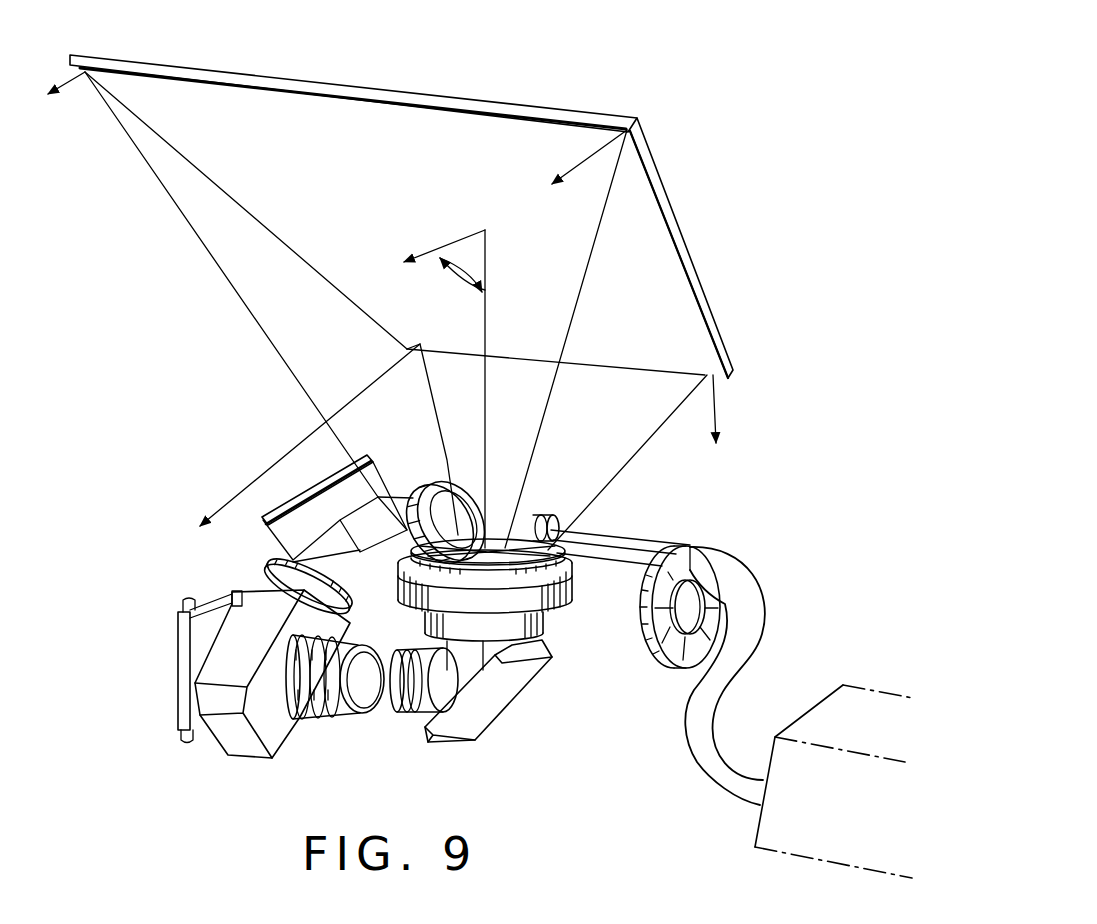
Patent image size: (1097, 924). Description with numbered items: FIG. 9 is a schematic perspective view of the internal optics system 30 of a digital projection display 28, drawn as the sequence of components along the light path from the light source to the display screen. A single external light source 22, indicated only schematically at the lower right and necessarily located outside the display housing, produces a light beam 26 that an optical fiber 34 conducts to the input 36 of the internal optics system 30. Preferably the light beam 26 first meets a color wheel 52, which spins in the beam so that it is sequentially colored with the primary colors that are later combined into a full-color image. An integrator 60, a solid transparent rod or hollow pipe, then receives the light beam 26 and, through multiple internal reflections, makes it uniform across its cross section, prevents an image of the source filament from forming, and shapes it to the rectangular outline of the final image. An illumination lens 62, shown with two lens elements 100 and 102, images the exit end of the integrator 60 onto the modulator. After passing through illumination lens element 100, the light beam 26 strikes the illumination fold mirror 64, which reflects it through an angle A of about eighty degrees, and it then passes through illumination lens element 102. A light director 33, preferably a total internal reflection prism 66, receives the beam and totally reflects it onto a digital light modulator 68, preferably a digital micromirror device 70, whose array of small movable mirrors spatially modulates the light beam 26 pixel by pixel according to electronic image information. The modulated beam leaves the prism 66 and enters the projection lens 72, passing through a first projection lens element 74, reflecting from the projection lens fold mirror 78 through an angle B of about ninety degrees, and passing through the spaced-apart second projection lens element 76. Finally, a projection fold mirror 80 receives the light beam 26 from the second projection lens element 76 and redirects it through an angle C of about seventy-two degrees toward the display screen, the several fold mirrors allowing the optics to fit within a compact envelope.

The external light source 22 is at (812, 858).
The light beam 26 is at (485, 392).
The digital projection display 28 is at (177, 55).
The internal optics system 30 is at (207, 462).
The light director 33 is at (278, 732).
The optical fiber 34 is at (762, 616).
The input 36 is at (702, 556).
The color wheel 52 is at (658, 655).
The integrator 60 is at (636, 540).
The illumination lens 62 is at (405, 492).
The illumination fold mirror 64 is at (315, 488).
The TIR prism 66 is at (248, 750).
The digital light modulator 68 is at (184, 740).
The digital micromirror device 70 is at (180, 692).
The projection lens 72 is at (404, 724).
The first projection lens element 74 is at (420, 660).
The second projection lens element 76 is at (573, 597).
The projection lens fold mirror 78 is at (533, 676).
The projection fold mirror 80 is at (680, 240).
The illumination lens element 100 is at (413, 462).
The illumination lens element 102 is at (270, 578).